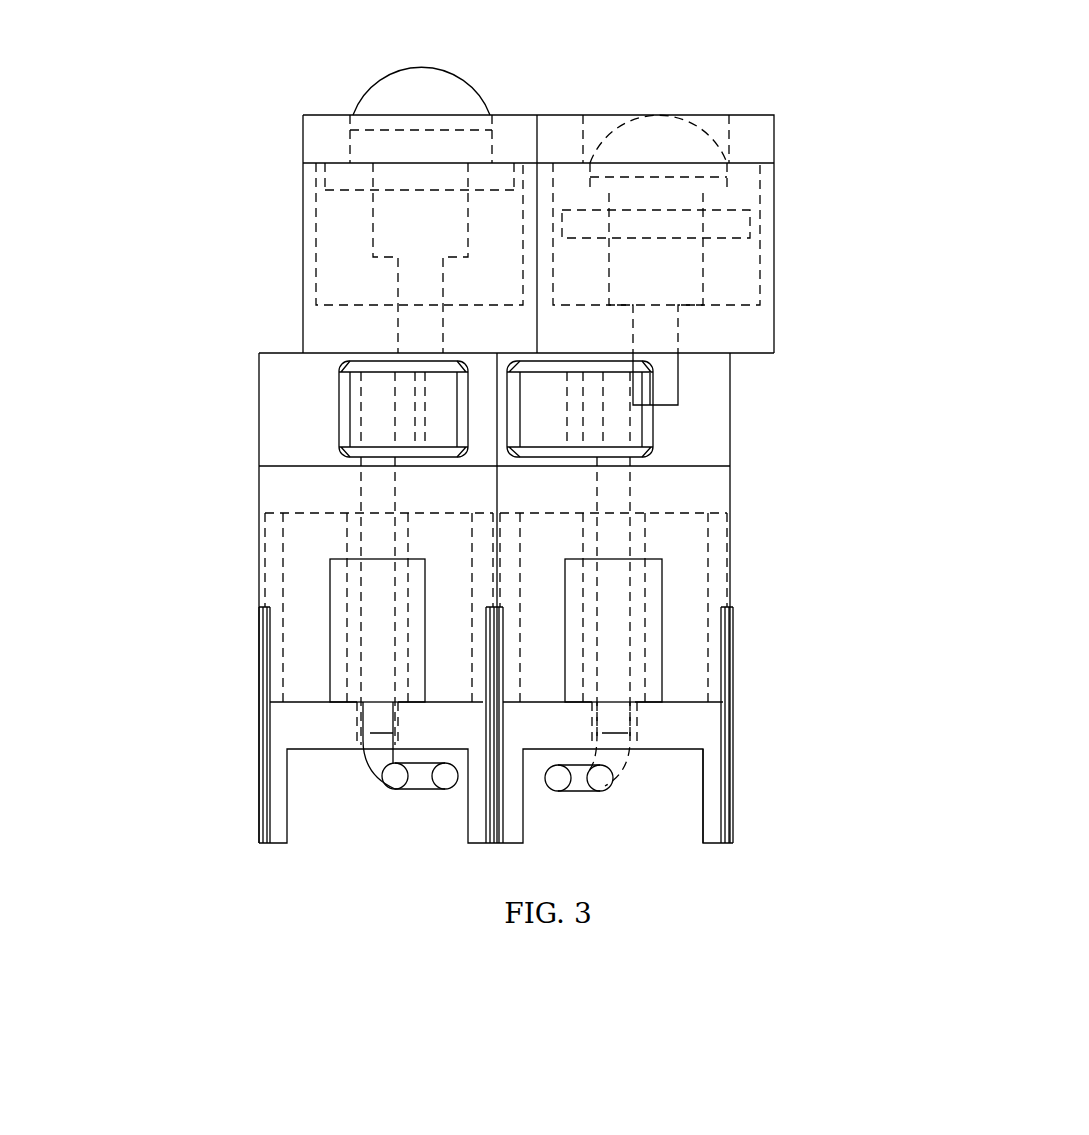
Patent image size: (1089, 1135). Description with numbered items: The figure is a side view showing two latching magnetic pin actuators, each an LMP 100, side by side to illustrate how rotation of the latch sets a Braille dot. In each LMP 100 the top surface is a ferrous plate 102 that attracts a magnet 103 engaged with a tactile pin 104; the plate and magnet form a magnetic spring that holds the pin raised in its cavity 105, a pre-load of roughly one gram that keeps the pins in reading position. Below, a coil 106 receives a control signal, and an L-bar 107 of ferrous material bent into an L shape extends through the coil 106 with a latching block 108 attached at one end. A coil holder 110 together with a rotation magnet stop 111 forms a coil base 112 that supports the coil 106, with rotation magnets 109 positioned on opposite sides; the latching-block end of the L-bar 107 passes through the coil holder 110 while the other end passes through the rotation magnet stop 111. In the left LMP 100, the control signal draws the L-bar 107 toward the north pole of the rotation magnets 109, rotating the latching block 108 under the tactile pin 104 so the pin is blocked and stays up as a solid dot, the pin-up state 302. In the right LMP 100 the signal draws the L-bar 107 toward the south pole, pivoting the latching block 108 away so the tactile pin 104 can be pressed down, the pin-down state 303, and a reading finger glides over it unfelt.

The LMP 100 is at (507, 612).
The ferrous plate 102 is at (288, 157).
The magnet 103 is at (732, 223).
The tactile pin 104 is at (710, 282).
The cavity 105 is at (283, 268).
The coil 106 is at (690, 590).
The L-bar 107 is at (350, 770).
The latching block 108 is at (335, 405).
The rotation magnets 109 is at (270, 680).
The coil holder 110 is at (728, 530).
The rotation magnet stop 111 is at (710, 785).
The coil base 112 is at (293, 557).
The pin up position 302 is at (353, 90).
The pin down position 303 is at (663, 97).